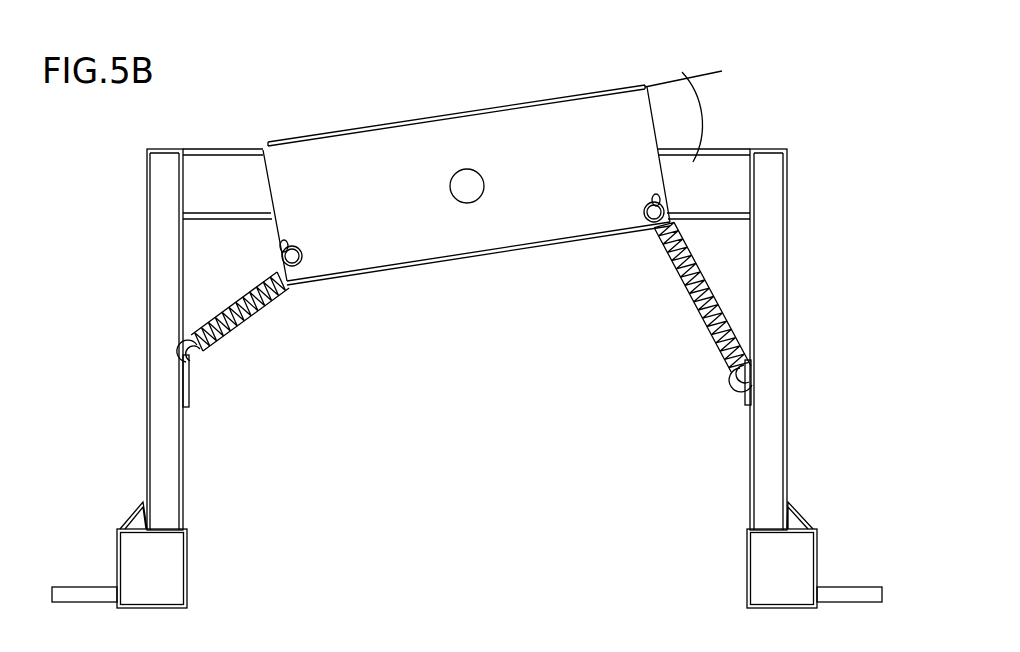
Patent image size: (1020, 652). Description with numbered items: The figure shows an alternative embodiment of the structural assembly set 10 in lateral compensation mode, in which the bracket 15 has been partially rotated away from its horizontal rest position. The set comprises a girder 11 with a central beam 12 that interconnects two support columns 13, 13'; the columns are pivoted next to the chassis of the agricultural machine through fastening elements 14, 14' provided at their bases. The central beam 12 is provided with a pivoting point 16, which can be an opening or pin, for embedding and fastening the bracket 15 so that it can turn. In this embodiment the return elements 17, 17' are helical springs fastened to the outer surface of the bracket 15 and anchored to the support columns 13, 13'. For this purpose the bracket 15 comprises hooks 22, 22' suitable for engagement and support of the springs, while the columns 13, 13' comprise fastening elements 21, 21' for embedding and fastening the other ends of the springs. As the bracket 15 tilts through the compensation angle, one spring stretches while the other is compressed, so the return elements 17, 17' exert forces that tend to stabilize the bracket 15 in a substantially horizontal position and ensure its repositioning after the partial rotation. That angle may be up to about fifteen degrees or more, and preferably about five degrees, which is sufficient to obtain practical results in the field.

The structural assembly set 10 is at (772, 88).
The girder 11 is at (218, 150).
The central beam 12 is at (732, 172).
The support column 13 is at (120, 339).
The support column 13' is at (824, 339).
The fastening element 14 is at (112, 552).
The fastening element 14' is at (828, 548).
The bracket 15 is at (562, 93).
The pivoting point 16 is at (460, 190).
The return element 17 is at (277, 321).
The return element 17' is at (678, 297).
The fastening element 21 is at (236, 400).
The fastening element 21' is at (696, 407).
The hook 22 is at (341, 291).
The hook 22' is at (621, 242).